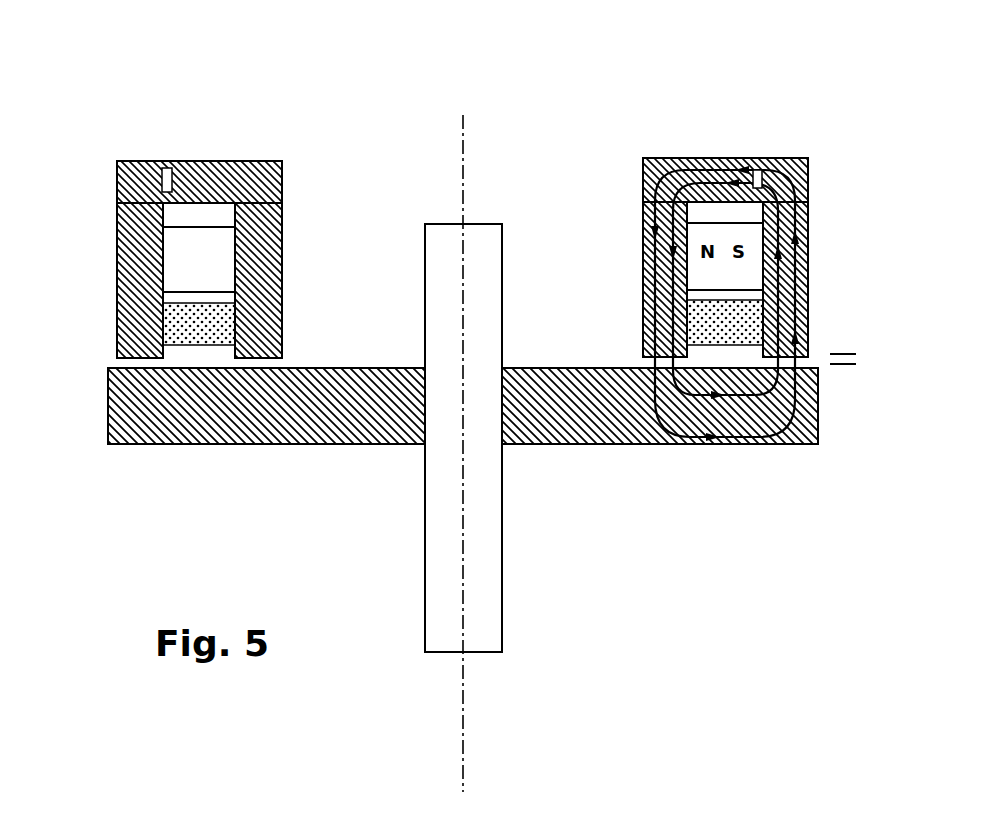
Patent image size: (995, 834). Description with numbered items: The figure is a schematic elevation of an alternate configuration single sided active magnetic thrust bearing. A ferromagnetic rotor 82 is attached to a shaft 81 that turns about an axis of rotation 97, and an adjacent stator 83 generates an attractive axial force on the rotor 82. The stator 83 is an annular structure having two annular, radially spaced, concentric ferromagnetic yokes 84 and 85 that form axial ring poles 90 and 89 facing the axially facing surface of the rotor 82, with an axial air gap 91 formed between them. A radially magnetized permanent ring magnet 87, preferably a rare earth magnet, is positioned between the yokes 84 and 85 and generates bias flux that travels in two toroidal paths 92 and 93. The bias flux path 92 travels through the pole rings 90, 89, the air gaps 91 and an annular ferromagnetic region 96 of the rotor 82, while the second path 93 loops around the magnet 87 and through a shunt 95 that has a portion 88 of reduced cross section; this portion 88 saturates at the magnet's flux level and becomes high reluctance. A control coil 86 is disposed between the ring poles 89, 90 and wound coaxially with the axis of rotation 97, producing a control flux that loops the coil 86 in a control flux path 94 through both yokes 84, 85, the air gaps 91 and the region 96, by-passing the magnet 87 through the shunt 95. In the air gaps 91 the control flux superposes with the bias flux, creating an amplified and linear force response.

The shaft 81 is at (487, 222).
The ferromagnetic rotor 82 is at (395, 368).
The stator 83 is at (652, 150).
The inner yoke 84 is at (282, 250).
The outer yoke 85 is at (117, 262).
The control coil 86 is at (224, 318).
The permanent ring magnet 87 is at (232, 236).
The high reluctance portion 88 is at (166, 160).
The axial ring pole 89 is at (122, 366).
The axial ring pole 90 is at (262, 360).
The axial air gap 91 is at (862, 357).
The bias flux path 92 is at (643, 293).
The second bias flux path 93 is at (806, 188).
The control flux path 94 is at (808, 277).
The shunt 95 is at (212, 160).
The annular ferromagnetic region 96 is at (660, 444).
The axis of rotation 97 is at (455, 138).